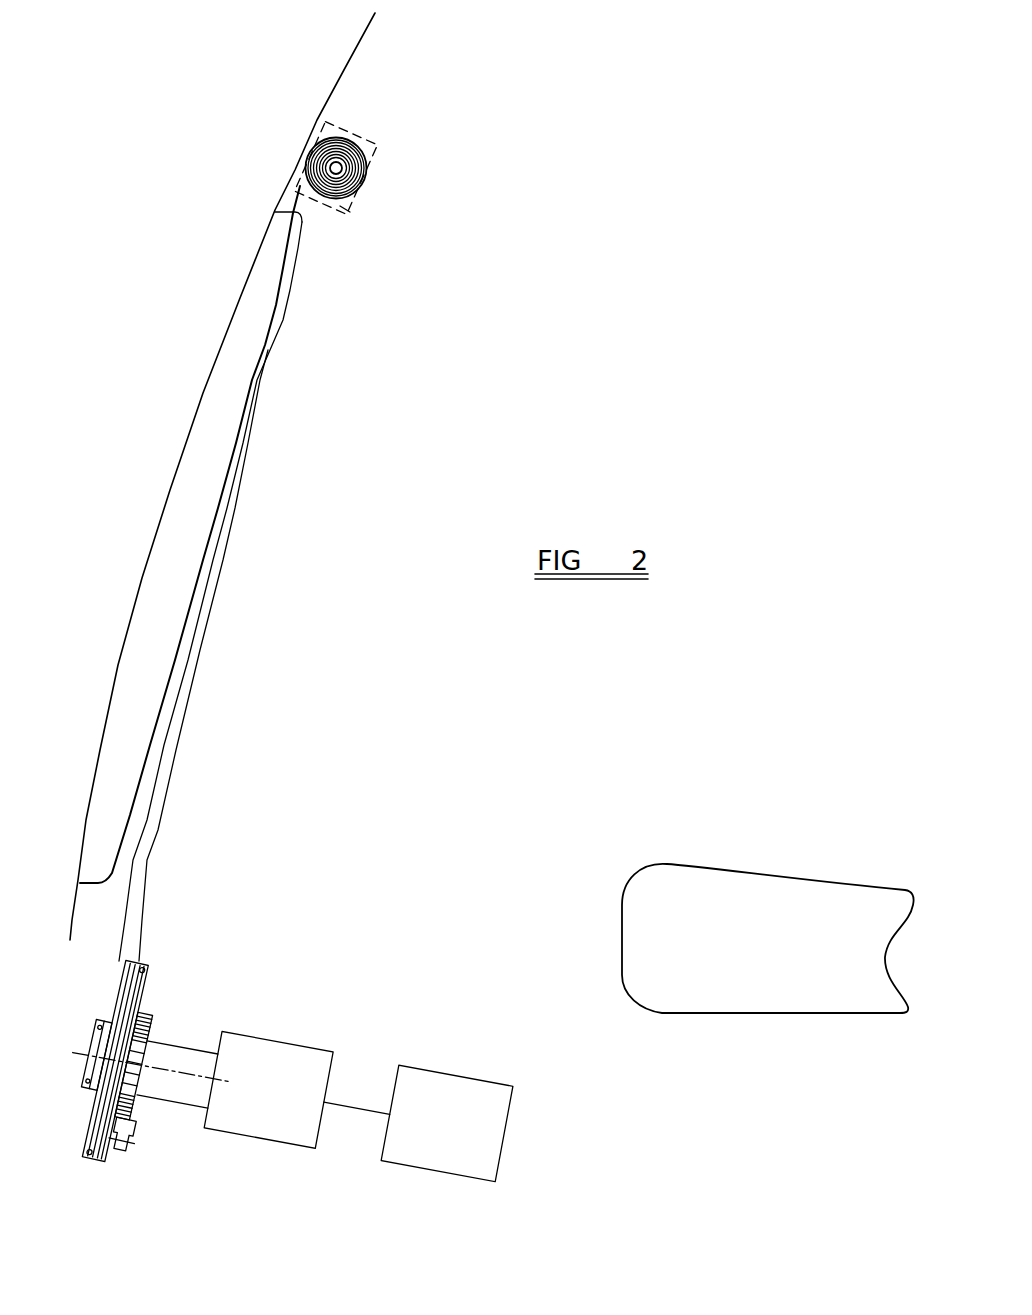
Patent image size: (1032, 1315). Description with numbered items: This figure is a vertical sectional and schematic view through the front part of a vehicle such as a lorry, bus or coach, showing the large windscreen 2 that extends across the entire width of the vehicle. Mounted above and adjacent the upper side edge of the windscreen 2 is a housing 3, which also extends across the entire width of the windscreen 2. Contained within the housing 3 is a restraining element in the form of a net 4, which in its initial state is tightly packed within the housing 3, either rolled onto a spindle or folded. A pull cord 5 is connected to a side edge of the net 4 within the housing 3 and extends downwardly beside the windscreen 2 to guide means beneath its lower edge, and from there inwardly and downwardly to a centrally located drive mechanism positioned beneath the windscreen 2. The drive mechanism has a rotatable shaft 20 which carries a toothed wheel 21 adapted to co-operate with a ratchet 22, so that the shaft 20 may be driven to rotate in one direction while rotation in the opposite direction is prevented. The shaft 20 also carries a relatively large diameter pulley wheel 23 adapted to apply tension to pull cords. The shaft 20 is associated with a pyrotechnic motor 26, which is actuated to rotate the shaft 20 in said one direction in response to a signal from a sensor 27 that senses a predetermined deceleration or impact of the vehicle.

The windscreen 2 is at (203, 395).
The housing 3 is at (378, 148).
The net 4 is at (350, 212).
The pull cord 5 is at (128, 915).
The rotatable shaft 20 is at (192, 1048).
The toothed wheel 21 is at (153, 1017).
The ratchet 22 is at (140, 1131).
The large diameter pulley wheel 23 is at (143, 986).
The pyrotechnic motor 26 is at (293, 1042).
The sensor 27 is at (460, 1087).